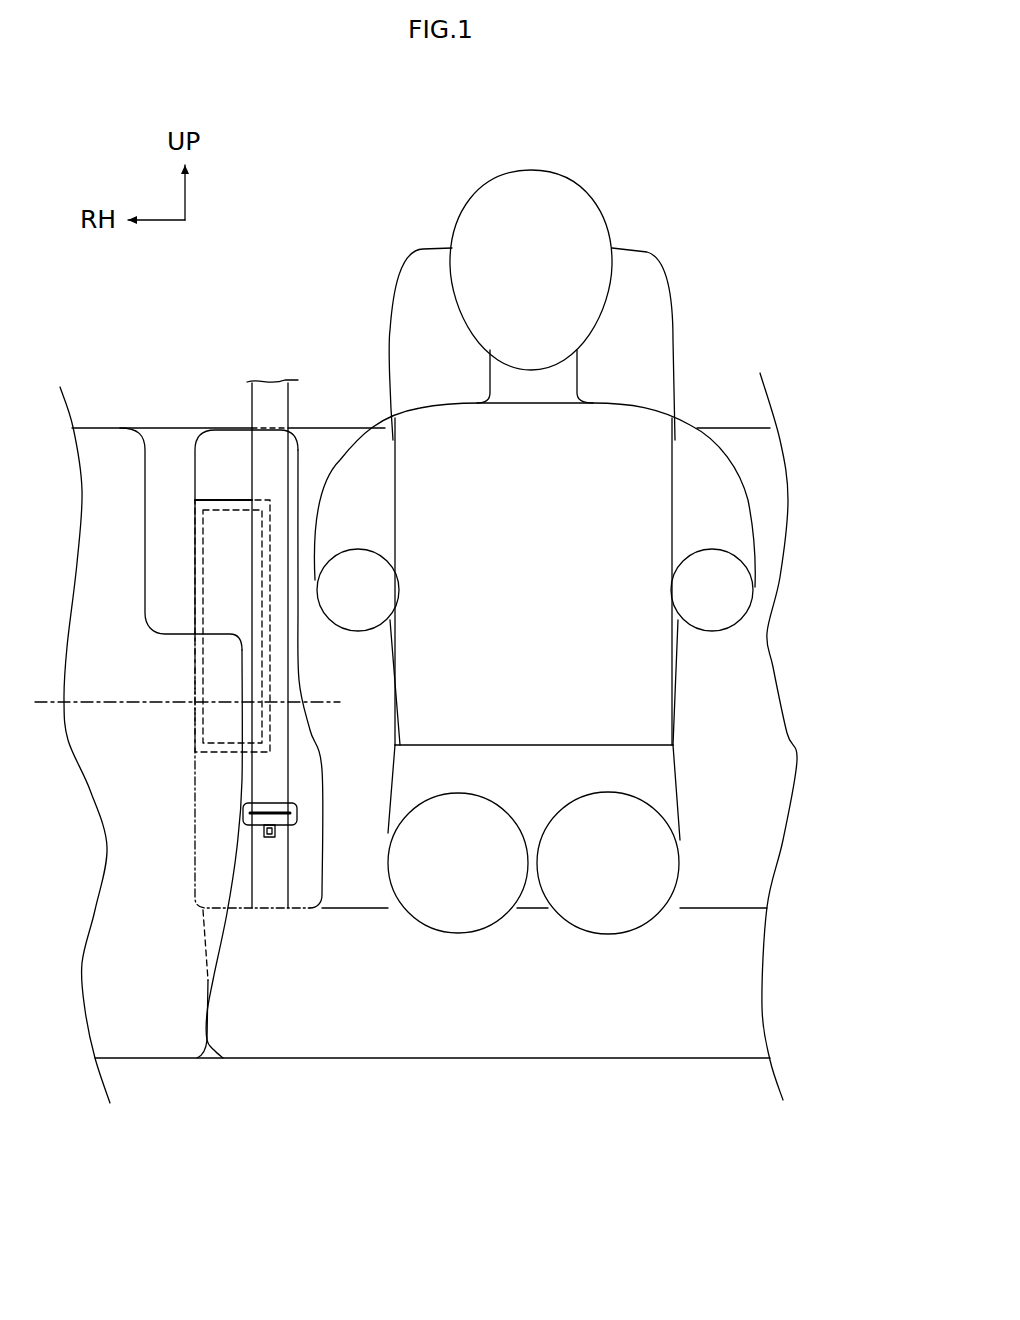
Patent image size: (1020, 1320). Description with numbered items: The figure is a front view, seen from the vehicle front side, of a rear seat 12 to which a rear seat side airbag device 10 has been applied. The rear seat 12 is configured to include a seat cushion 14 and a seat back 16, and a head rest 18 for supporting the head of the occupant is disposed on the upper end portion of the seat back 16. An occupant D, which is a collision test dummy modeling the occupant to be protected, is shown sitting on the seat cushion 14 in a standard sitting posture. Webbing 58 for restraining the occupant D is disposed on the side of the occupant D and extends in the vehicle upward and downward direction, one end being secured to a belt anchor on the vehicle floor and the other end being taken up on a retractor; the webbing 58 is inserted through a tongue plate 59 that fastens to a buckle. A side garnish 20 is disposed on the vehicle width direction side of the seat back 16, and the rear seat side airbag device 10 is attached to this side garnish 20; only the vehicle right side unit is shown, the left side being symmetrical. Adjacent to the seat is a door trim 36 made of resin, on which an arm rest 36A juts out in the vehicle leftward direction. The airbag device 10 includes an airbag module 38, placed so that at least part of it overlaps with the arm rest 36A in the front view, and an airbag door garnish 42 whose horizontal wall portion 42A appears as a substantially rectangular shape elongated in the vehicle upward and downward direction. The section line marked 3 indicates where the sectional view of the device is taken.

The occupant D is at (456, 214).
The rear seat side airbag device 10 is at (230, 494).
The rear seat 12 is at (738, 422).
The seat cushion 14 is at (670, 1058).
The seat back 16 is at (762, 657).
The head rest 18 is at (648, 254).
The side garnish 20 is at (195, 463).
The door trim 36 is at (107, 422).
The arm rest 36A is at (178, 634).
The airbag module 38 is at (200, 504).
The airbag door garnish 42 is at (295, 504).
The horizontal wall portion 42A is at (240, 500).
The webbing 58 is at (292, 405).
The tongue plate 59 is at (300, 813).
The section line 3- 3 is at (42, 696).